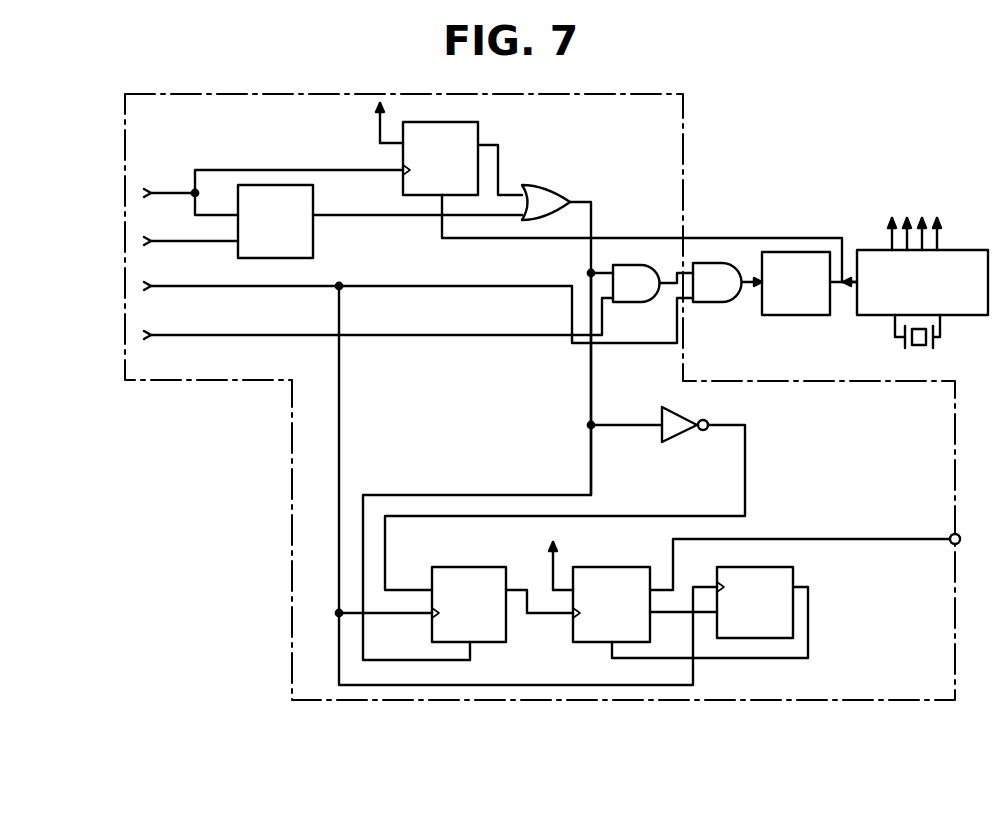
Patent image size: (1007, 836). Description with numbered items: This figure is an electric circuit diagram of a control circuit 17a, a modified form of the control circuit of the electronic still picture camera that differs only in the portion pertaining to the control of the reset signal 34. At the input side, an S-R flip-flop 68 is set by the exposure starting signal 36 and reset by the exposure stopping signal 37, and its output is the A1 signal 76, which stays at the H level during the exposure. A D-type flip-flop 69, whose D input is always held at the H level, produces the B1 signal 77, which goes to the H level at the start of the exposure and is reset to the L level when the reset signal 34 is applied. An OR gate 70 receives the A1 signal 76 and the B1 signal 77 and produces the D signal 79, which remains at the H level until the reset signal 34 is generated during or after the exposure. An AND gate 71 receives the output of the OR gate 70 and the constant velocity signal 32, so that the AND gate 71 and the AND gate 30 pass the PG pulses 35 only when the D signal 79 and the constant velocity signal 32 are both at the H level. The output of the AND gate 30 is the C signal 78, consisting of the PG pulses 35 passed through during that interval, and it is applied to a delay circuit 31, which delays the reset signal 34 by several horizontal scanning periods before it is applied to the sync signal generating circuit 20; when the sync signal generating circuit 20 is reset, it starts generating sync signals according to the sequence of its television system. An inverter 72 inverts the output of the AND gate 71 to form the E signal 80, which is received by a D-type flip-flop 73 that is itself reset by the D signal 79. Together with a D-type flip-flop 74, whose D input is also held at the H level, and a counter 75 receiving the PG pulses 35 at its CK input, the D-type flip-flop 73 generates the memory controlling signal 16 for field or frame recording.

The memory controlling signal 16 is at (830, 539).
The control circuit 17a is at (292, 480).
The sync signal generating circuit 20 is at (977, 250).
The AND gate 30 is at (712, 302).
The delay circuit 31 is at (785, 315).
The constant velocity signal 32 is at (166, 329).
The reset signal 34 is at (722, 238).
The PG pulse 35 is at (166, 280).
The exposure starting signal 36 is at (160, 189).
The exposure stopping signal 37 is at (162, 235).
The S-R flip-flop 68 is at (314, 250).
The D-type flip-flop 69 is at (403, 152).
The OR gate 70 is at (563, 190).
The AND gate 71 is at (640, 302).
The inverter 72 is at (677, 441).
The D-type flip-flop 73 is at (477, 644).
The D-type flip-flop 74 is at (601, 644).
The counter 75 is at (758, 638).
The A1 signal 76 is at (400, 217).
The B1 signal 77 is at (500, 162).
The C signal 78 is at (745, 291).
The D signal 79 is at (591, 393).
The E signal 80 is at (516, 590).